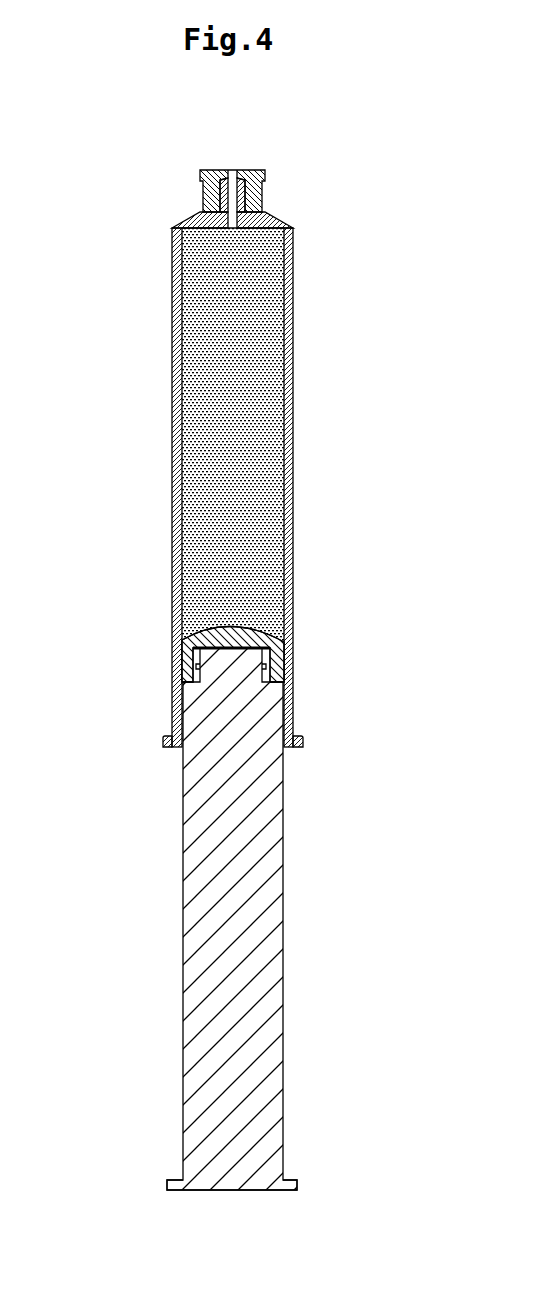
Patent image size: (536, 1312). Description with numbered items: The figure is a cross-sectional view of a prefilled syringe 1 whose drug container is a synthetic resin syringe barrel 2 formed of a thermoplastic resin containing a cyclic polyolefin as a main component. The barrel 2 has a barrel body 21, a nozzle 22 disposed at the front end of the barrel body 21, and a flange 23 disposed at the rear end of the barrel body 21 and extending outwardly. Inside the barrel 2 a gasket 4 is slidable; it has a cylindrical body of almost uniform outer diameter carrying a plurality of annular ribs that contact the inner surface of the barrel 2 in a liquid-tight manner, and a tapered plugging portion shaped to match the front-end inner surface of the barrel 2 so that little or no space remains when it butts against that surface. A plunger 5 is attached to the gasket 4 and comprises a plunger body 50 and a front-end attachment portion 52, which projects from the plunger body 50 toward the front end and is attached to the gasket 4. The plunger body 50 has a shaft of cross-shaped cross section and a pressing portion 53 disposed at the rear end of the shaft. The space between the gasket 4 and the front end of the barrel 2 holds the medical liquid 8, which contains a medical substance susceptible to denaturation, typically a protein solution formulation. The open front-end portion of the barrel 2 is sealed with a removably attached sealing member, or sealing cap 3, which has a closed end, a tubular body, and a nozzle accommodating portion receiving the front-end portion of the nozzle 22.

The syringe 1 is at (248, 680).
The syringe barrel 2 is at (230, 496).
The sealing member (sealing cap) 3 is at (266, 192).
The gasket 4 is at (285, 633).
The plunger 5 is at (302, 919).
The medical liquid 8 is at (183, 427).
The barrel body 21 is at (173, 305).
The nozzle 22 is at (203, 192).
The flange 23 is at (175, 748).
The plunger body 50 is at (256, 1034).
The front-end attachment portion 52 is at (280, 656).
The pressing portion 53 is at (296, 1182).